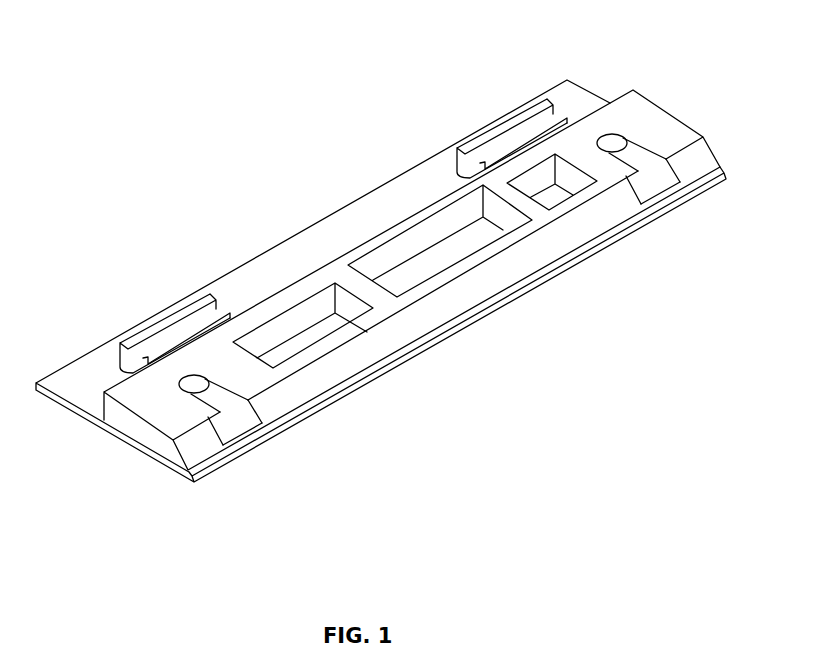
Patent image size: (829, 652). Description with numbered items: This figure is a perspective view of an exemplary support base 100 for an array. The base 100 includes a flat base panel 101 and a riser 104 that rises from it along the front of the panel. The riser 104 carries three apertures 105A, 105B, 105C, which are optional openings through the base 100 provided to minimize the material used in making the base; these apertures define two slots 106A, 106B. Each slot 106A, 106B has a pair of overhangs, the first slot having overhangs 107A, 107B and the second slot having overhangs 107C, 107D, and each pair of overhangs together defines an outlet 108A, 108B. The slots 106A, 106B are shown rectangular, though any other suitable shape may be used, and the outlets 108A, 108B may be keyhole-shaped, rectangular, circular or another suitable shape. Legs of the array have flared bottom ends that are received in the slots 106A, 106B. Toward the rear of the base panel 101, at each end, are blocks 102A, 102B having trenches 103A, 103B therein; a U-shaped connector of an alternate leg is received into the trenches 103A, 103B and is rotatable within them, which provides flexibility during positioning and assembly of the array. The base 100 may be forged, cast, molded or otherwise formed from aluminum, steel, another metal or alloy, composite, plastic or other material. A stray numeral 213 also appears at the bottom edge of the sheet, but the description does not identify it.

The support base 100 is at (422, 309).
The base panel 101 is at (68, 403).
The block 102A is at (124, 342).
The block 102B is at (462, 150).
The trench 103A is at (187, 327).
The trench 103B is at (528, 133).
The riser 104 is at (142, 428).
The aperture 105A is at (305, 320).
The aperture 105B is at (462, 215).
The aperture 105C is at (545, 173).
The slot 106A is at (241, 435).
The slot 106B is at (661, 190).
The overhang 107A is at (210, 418).
The overhang 107B is at (237, 427).
The overhang 107C is at (652, 185).
The overhang 107D is at (657, 180).
The outlet 108A is at (193, 387).
The outlet 108B is at (620, 148).
The reference from adjacent figure 213 is at (635, 651).